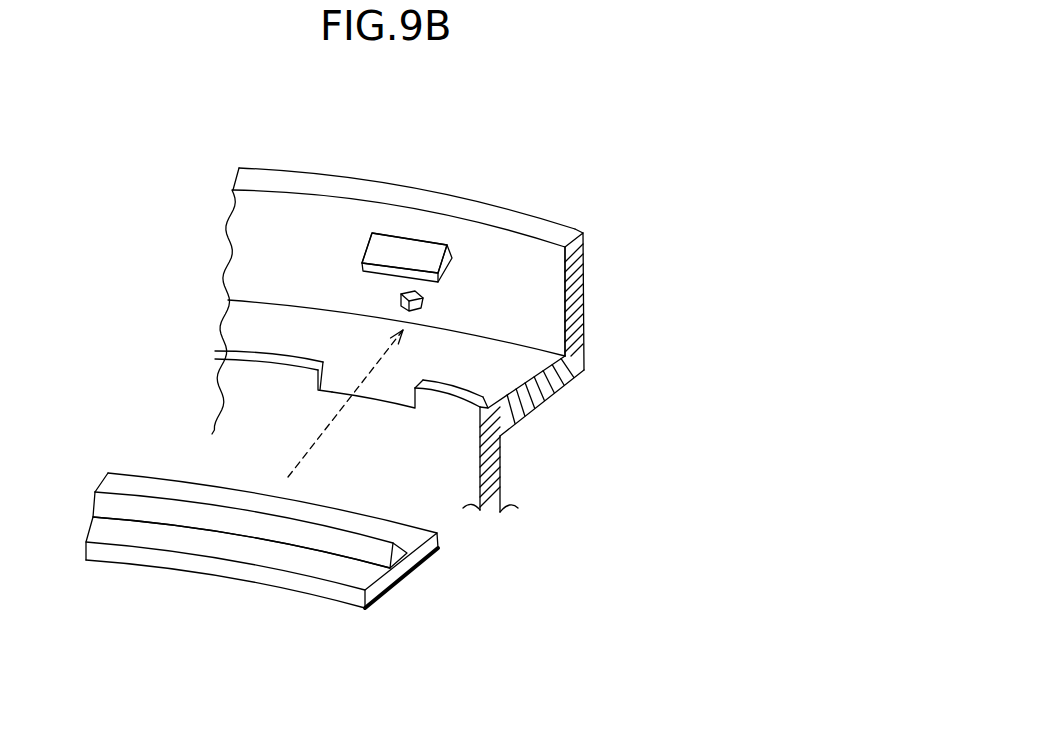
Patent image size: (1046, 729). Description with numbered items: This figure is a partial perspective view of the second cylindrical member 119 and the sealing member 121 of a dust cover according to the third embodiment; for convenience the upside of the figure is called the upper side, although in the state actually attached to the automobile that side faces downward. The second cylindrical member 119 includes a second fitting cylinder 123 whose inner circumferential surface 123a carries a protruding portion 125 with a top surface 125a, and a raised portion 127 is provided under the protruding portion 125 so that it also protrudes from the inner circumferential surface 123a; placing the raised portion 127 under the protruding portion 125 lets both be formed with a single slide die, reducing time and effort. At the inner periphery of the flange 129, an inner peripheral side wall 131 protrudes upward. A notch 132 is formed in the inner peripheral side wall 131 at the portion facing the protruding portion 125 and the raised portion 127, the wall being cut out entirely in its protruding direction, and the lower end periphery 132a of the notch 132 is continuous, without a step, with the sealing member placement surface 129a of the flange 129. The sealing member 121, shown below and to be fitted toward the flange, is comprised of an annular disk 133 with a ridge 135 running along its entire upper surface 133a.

The second cylindrical member 119 is at (308, 130).
The sealing member 121 is at (183, 591).
The second fitting cylinder 123 is at (586, 276).
The inner circumferential surface 123a is at (547, 277).
The protruding portion 125 is at (382, 247).
The top surface of projection 125a is at (398, 250).
The raised portion 127 is at (399, 297).
The flange 129 is at (565, 388).
The sealing member placement surface 129a is at (247, 323).
The inner peripheral side wall 131 is at (518, 420).
The notch 132 is at (332, 391).
The lower end periphery 132a is at (393, 393).
The annular disk 133 is at (298, 582).
The upper surface 133a is at (115, 535).
The ridge 135 is at (133, 507).